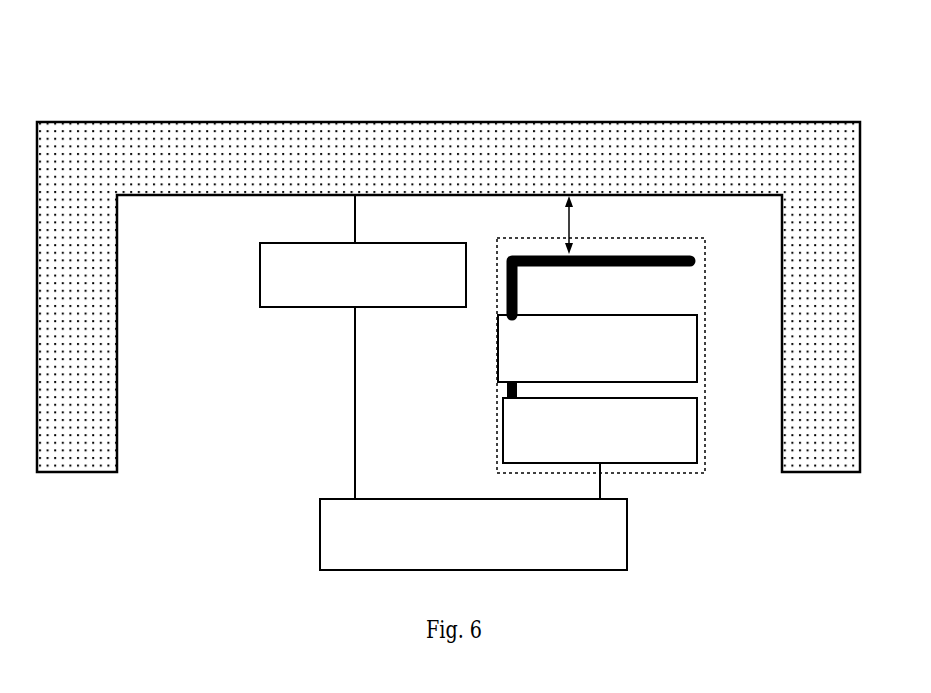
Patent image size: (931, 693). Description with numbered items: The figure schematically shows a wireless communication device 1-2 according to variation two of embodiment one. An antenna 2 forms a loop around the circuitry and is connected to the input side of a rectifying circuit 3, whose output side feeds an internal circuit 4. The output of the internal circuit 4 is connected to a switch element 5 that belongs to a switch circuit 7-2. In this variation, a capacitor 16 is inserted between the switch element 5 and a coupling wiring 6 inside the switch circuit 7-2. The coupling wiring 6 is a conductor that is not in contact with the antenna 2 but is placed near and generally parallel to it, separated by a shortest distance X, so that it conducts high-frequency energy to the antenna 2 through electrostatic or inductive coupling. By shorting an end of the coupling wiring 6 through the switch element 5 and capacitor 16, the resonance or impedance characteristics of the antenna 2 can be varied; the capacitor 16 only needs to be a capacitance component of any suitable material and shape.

The wireless communication device 1-2 is at (449, 30).
The antenna 2 is at (68, 135).
The rectifying circuit 3 is at (260, 278).
The internal circuit 4 is at (320, 533).
The switch element 5 is at (503, 429).
The coupling wiring 6 is at (677, 253).
The switch circuit 7-2 is at (705, 476).
The capacitor 16 is at (498, 346).